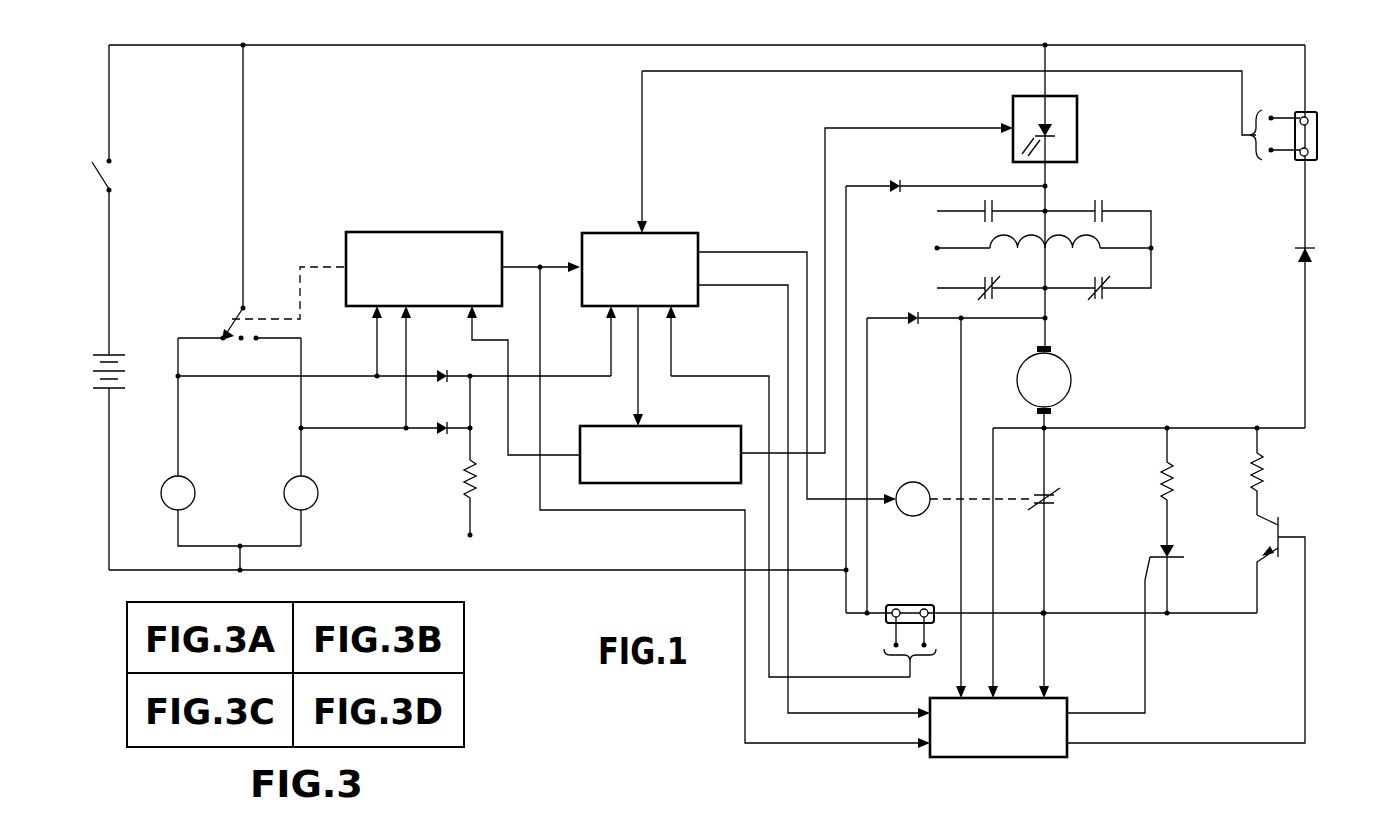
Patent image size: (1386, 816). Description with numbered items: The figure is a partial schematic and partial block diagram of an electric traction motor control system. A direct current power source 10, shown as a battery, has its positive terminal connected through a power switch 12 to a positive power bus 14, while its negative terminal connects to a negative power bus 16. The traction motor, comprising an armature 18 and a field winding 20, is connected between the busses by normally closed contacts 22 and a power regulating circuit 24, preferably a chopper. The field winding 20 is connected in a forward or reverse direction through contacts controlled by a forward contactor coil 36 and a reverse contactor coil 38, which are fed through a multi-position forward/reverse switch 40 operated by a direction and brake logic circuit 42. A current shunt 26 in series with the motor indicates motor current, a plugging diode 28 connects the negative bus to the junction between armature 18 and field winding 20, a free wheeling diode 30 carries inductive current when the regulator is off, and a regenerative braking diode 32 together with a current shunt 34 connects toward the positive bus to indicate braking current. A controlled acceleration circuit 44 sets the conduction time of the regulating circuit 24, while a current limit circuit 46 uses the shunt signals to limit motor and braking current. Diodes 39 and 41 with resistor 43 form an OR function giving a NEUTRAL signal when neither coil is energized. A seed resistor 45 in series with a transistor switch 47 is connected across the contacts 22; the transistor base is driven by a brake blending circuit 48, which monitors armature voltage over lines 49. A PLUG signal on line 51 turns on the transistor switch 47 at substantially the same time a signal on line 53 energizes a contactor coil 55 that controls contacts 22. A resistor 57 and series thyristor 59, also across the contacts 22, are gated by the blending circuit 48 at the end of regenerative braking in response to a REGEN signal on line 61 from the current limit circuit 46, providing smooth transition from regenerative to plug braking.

The direct current electric power source 10 is at (127, 352).
The power switch 12 is at (115, 180).
The positive power bus 14 is at (192, 46).
The negative power bus 16 is at (142, 568).
The armature 18 is at (1072, 360).
The field winding 20 is at (1066, 270).
The normally closed contacts 22 is at (1062, 490).
The power regulating circuit 24 is at (1082, 140).
The current shunt 26 is at (912, 602).
The plugging diode 28 is at (910, 316).
The free wheeling diode 30 is at (912, 182).
The regenerative braking diode 32 is at (1294, 254).
The current shunt 34 is at (1296, 164).
The forward contactor coil 36 is at (192, 489).
The reverse contactor coil 38 is at (282, 496).
The diode 39 is at (440, 368).
The multi-position forward/reverse switch 40 is at (226, 320).
The diode 41 is at (432, 440).
The direction and brake logic circuit 42 is at (424, 228).
The resistor 43 is at (458, 488).
The controlled acceleration circuit 44 is at (700, 434).
The seed resistor 45 is at (1268, 476).
The current limit circuit 46 is at (678, 230).
The transistor switch 47 is at (1258, 534).
The brake blending circuit 48 is at (1068, 700).
The lines 49 is at (993, 424).
The line 51 is at (570, 512).
The line 53 is at (828, 500).
The contactor coil 55 is at (914, 484).
The resistor 57 is at (1178, 480).
The thyristor 59 is at (1212, 564).
The line 61 is at (788, 618).